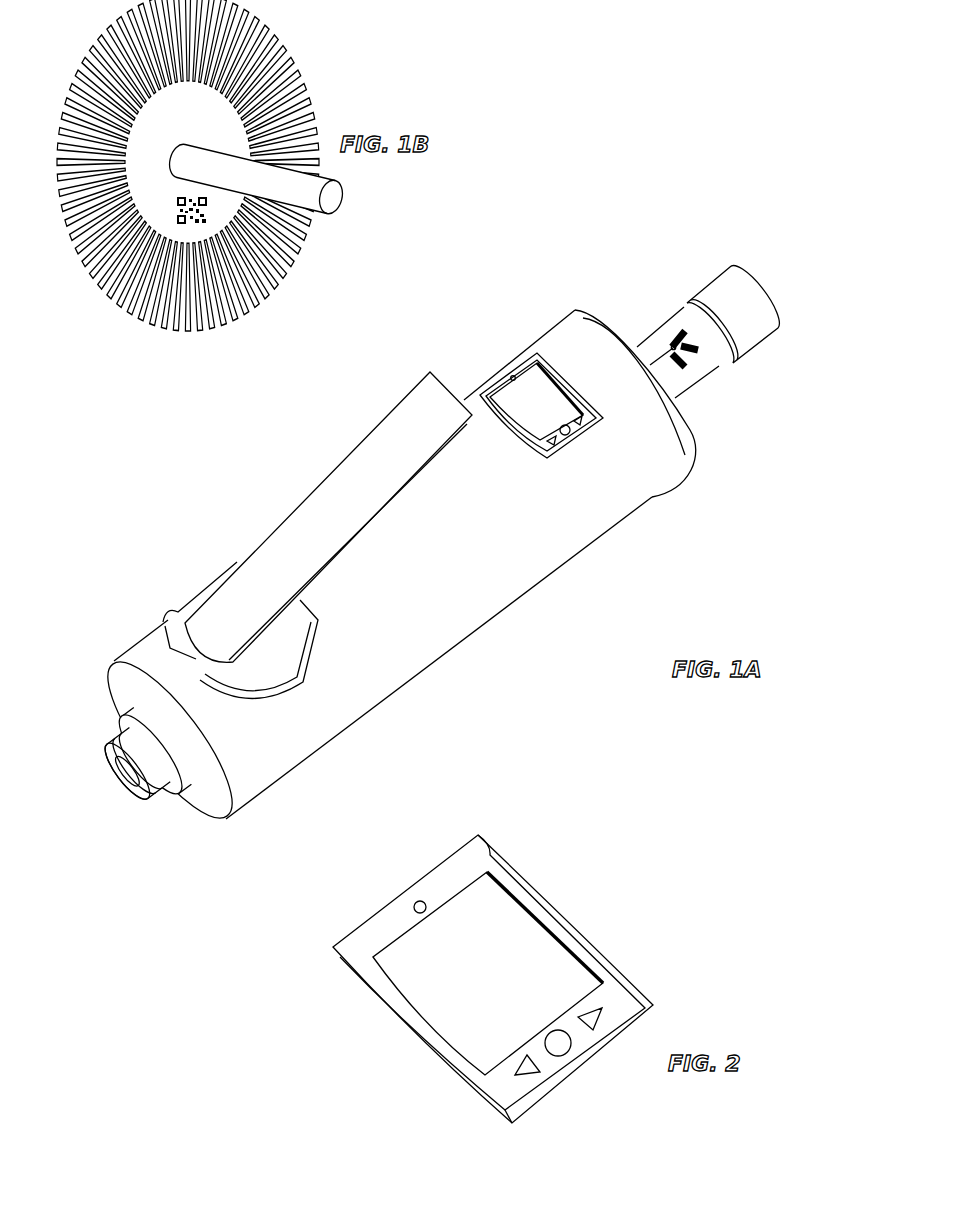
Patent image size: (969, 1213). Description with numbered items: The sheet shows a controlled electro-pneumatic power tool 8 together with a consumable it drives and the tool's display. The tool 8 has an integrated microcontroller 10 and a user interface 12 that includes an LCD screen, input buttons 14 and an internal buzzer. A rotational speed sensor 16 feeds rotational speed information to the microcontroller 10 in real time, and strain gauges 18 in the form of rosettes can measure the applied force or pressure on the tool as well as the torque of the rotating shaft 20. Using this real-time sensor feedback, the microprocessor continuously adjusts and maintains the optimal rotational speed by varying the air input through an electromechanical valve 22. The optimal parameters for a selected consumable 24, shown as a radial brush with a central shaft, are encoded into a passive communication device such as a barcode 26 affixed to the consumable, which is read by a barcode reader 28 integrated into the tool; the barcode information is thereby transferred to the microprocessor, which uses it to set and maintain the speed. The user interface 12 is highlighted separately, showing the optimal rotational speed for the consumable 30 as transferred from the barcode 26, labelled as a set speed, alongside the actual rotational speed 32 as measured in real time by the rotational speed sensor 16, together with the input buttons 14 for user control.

In FIG. 1A, the controlled electro-pneumatic power tool 8 is at (355, 658).
In FIG. 1A, the microcontroller 10 is at (493, 428).
In FIG. 1A, the user interface 12 is at (531, 420).
In FIG. 2, the user interface 12 is at (413, 962).
In FIG. 1A, the input buttons 14 is at (568, 436).
In FIG. 2, the input buttons 14 is at (563, 1054).
In FIG. 1A, the rotational speed sensor 16 is at (623, 378).
In FIG. 1A, the strain gauges 18 is at (691, 372).
In FIG. 1A, the rotating shaft 20 is at (735, 309).
In FIG. 1A, the electromechanical valve 22 is at (165, 690).
In FIG. 1B, the consumable 24 is at (273, 78).
In FIG. 1B, the barcode 26 is at (165, 224).
In FIG. 1A, the barcode reader 28 is at (512, 368).
In FIG. 2, the barcode reader 28 is at (403, 906).
In FIG. 2, the optimal rotational speed for the consumable 30 is at (478, 1045).
In FIG. 2, the actual rotational speed 32 is at (580, 996).